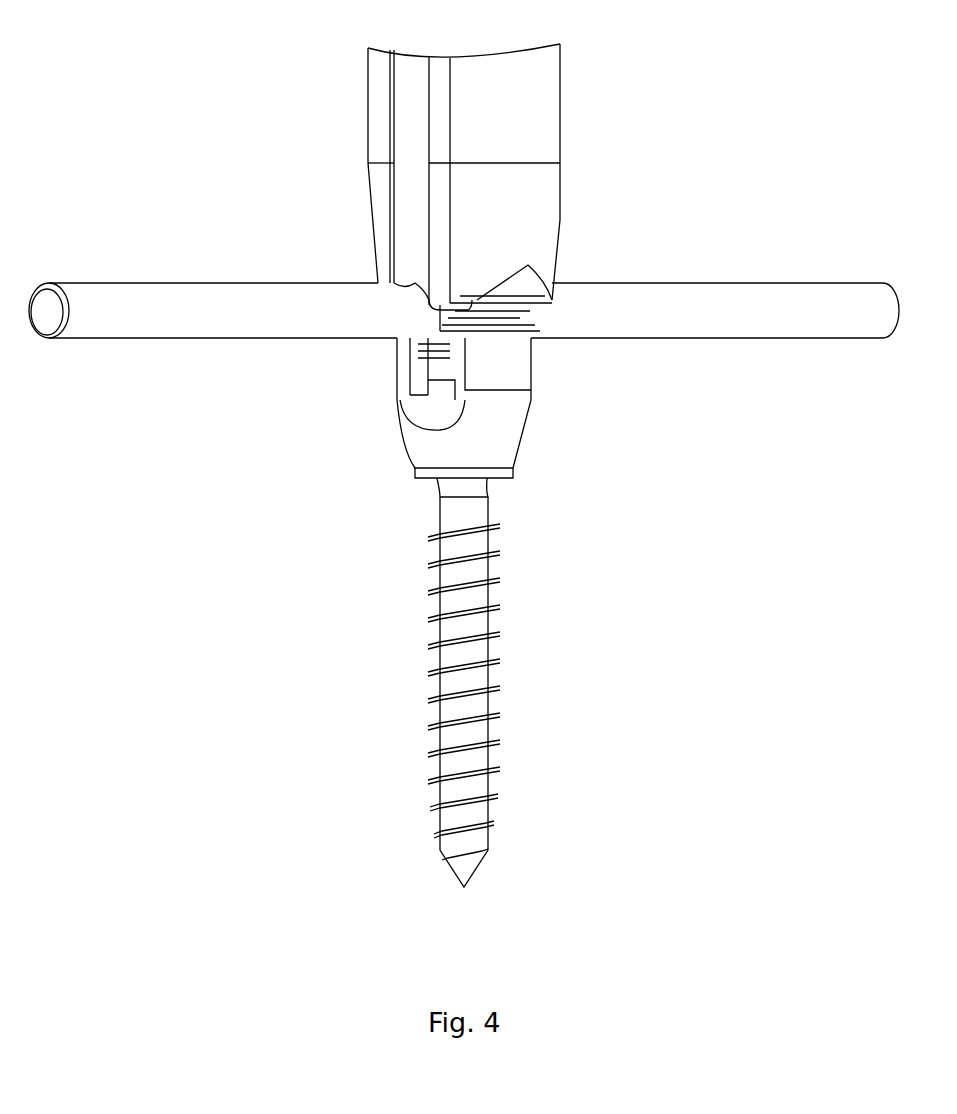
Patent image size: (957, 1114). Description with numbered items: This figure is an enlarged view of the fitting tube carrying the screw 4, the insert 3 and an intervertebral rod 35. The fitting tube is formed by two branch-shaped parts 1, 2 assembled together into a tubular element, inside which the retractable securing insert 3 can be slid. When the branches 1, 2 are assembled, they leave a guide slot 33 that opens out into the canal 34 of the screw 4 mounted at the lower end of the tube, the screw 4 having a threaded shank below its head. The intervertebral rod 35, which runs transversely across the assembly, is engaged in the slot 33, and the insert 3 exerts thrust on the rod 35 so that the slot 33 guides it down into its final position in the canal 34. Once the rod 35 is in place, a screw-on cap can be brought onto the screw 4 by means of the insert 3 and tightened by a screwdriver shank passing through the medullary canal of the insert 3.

The branch-shaped part 1 is at (510, 238).
The branch-shaped part 2 is at (380, 238).
The retractable securing insert 3 is at (408, 133).
The screw 4 is at (427, 457).
The guide slot 33 is at (550, 305).
The canal 34 is at (407, 368).
The intervertebral rod 35 is at (737, 330).